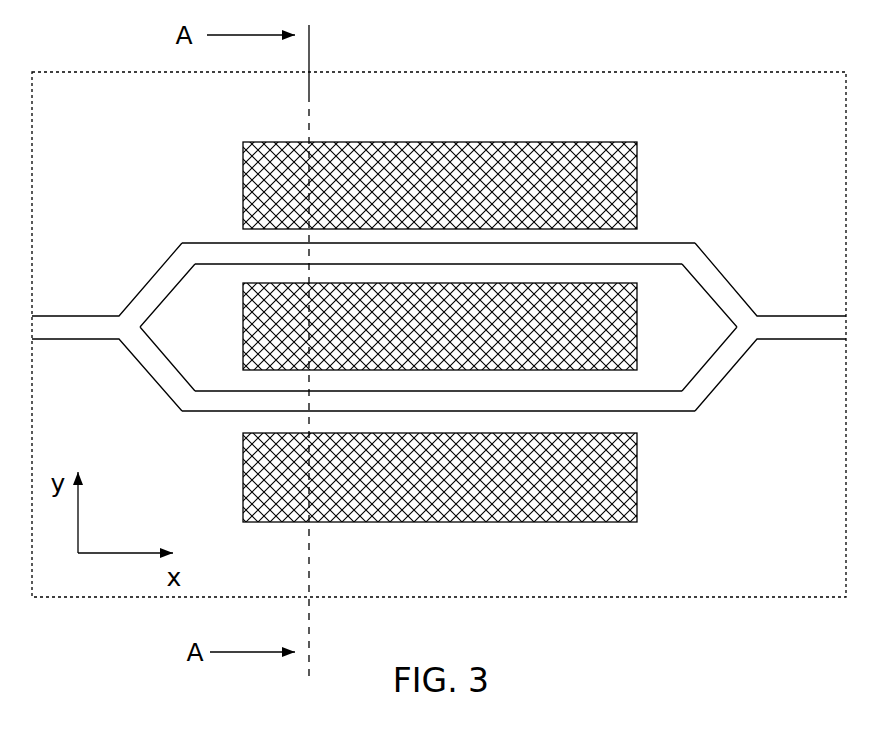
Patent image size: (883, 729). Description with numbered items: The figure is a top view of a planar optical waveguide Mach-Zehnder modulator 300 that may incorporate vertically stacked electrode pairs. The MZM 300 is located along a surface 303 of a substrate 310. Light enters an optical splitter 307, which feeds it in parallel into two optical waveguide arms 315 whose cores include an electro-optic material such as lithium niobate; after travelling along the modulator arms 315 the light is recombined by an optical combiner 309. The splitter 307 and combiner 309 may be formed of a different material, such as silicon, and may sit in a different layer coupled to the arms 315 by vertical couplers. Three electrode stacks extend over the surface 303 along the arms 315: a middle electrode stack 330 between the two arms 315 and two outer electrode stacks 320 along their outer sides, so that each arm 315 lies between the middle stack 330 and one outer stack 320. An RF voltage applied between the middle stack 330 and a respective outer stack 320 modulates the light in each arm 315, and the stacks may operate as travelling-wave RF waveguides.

The planar optical waveguide Mach-Zehnder modulator 300 is at (440, 28).
The surface 303 is at (518, 97).
The optical splitter 307 is at (113, 302).
The optical combiner 309 is at (757, 303).
The substrate 310 is at (118, 104).
The optical waveguide arms 315 is at (200, 243).
The outer electrode stacks 320 is at (468, 201).
The middle electrode stack 330 is at (412, 341).